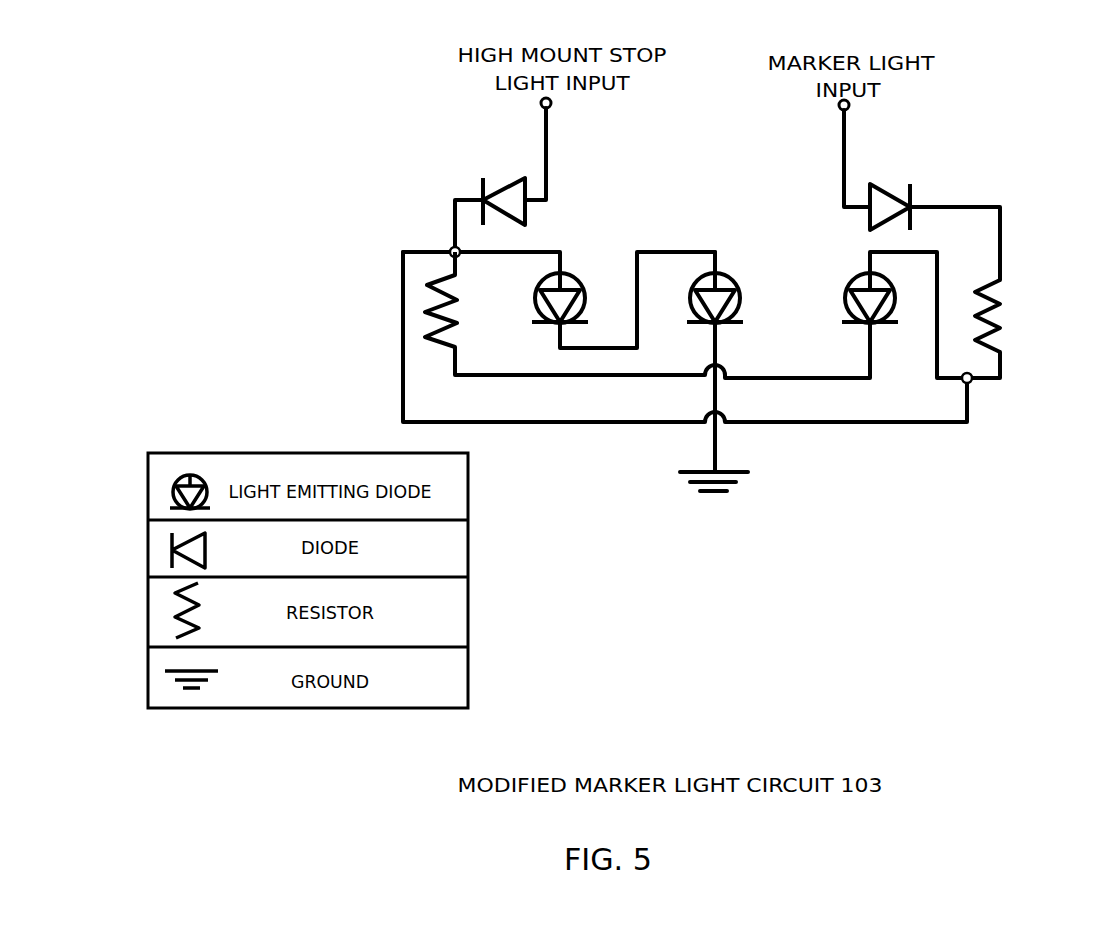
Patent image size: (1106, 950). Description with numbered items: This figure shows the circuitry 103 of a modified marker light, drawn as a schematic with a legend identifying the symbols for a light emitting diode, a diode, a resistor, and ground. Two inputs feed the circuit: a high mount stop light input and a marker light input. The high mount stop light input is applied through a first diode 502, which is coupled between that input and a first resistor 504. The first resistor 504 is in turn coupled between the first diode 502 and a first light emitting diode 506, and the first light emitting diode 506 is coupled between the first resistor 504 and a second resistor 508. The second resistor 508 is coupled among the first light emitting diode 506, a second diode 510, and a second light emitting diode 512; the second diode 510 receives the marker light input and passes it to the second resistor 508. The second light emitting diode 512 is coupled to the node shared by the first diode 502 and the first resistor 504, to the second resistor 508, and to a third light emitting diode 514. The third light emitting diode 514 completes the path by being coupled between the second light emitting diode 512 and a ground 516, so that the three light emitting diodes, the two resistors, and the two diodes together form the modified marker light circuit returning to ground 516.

The circuitry 103 is at (196, 146).
The first diode 502 is at (530, 215).
The first resistor 504 is at (450, 313).
The first light emitting diode 506 is at (846, 290).
The second resistor 508 is at (1010, 306).
The second diode 510 is at (895, 182).
The second light emitting diode 512 is at (575, 272).
The third light emitting diode 514 is at (722, 272).
The ground 516 is at (748, 488).